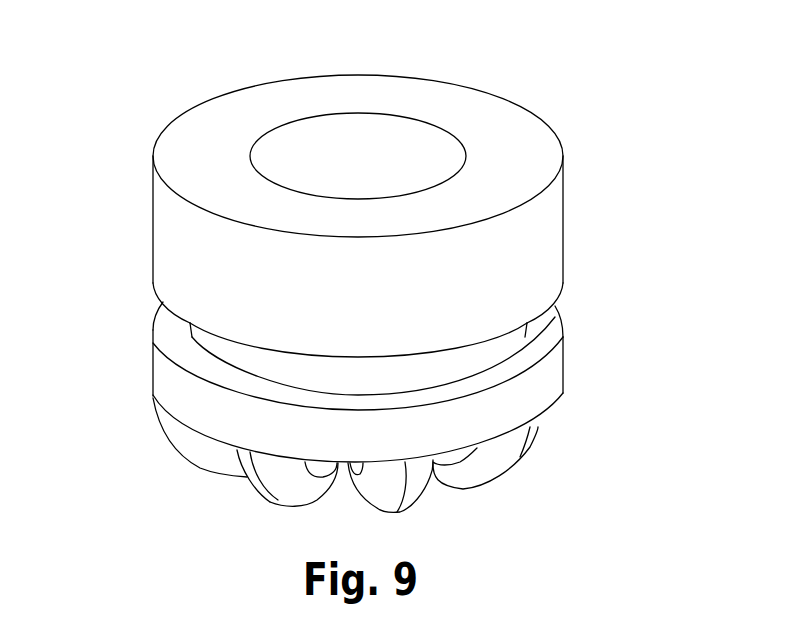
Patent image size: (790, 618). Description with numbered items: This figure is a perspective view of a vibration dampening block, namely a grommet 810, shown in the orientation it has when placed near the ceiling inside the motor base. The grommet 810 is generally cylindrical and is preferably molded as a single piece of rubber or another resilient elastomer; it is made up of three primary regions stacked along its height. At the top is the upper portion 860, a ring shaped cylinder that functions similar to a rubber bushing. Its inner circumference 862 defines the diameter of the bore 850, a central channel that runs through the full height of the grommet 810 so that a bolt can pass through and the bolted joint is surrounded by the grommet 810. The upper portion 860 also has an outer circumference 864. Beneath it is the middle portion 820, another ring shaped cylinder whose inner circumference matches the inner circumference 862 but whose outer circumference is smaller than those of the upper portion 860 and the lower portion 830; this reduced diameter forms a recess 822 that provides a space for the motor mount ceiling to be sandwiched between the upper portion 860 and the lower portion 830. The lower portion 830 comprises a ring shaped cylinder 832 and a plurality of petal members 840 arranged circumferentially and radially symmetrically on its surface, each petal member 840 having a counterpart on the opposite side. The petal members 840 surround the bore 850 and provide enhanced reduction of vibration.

The grommet 810 is at (362, 286).
The middle portion 820 is at (498, 344).
The recess 822 is at (184, 327).
The lower portion 830 is at (549, 378).
The ring shaped cylinder 832 is at (172, 395).
The petal members 840 is at (377, 506).
The bore 850 is at (360, 172).
The upper portion 860 is at (435, 163).
The inner circumference 862 is at (467, 162).
The outer circumference 864 is at (560, 137).